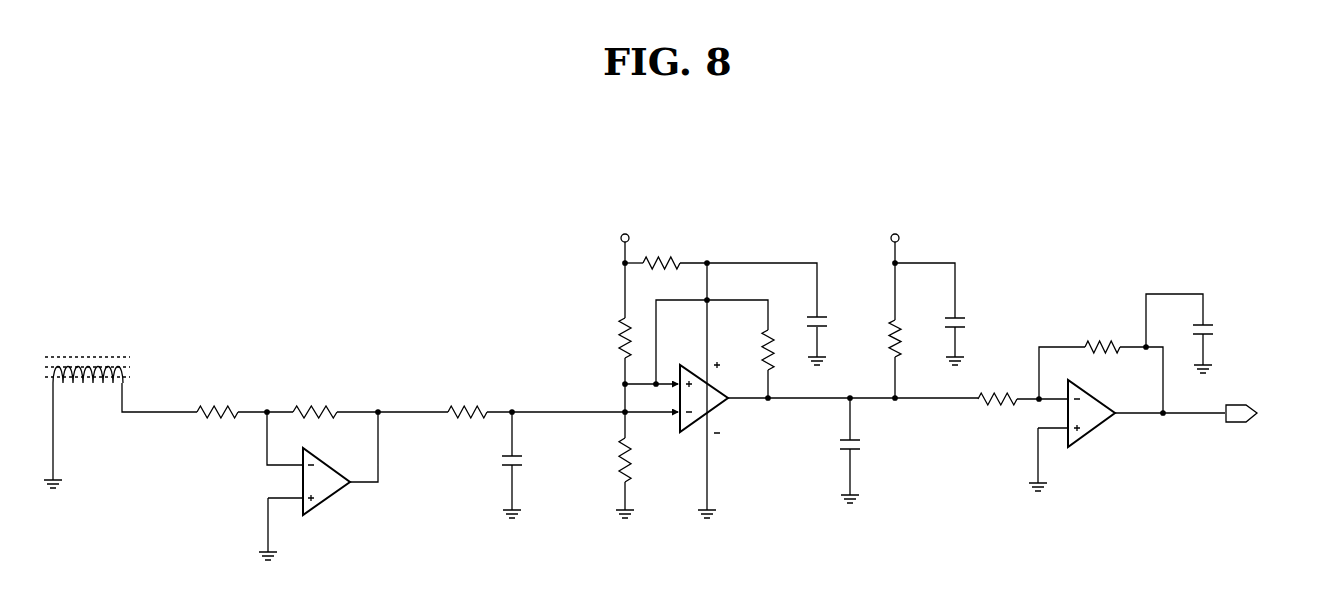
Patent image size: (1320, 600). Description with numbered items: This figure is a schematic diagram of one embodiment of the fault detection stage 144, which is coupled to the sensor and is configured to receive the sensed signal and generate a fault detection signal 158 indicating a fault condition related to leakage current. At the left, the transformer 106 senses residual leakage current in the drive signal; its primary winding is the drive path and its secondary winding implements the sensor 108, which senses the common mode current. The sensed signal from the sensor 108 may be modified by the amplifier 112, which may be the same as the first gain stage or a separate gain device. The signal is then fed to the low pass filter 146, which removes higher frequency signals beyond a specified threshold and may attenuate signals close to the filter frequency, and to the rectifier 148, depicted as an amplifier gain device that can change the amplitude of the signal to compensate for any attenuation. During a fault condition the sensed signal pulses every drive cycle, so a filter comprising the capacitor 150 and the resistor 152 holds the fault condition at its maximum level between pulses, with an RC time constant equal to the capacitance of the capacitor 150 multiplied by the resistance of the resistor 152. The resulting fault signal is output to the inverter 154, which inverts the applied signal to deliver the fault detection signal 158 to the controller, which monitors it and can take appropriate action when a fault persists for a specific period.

The transformer 106 is at (60, 332).
The sensor 108 is at (118, 348).
The amplifier 112 is at (337, 512).
The fault detection stage 144 is at (322, 416).
The low pass filter 146 is at (506, 404).
The rectifier 148 is at (735, 420).
The capacitor 150 is at (853, 452).
The resistor 152 is at (874, 312).
The inverter 154 is at (1087, 452).
The fault detection signal 158 is at (1255, 407).